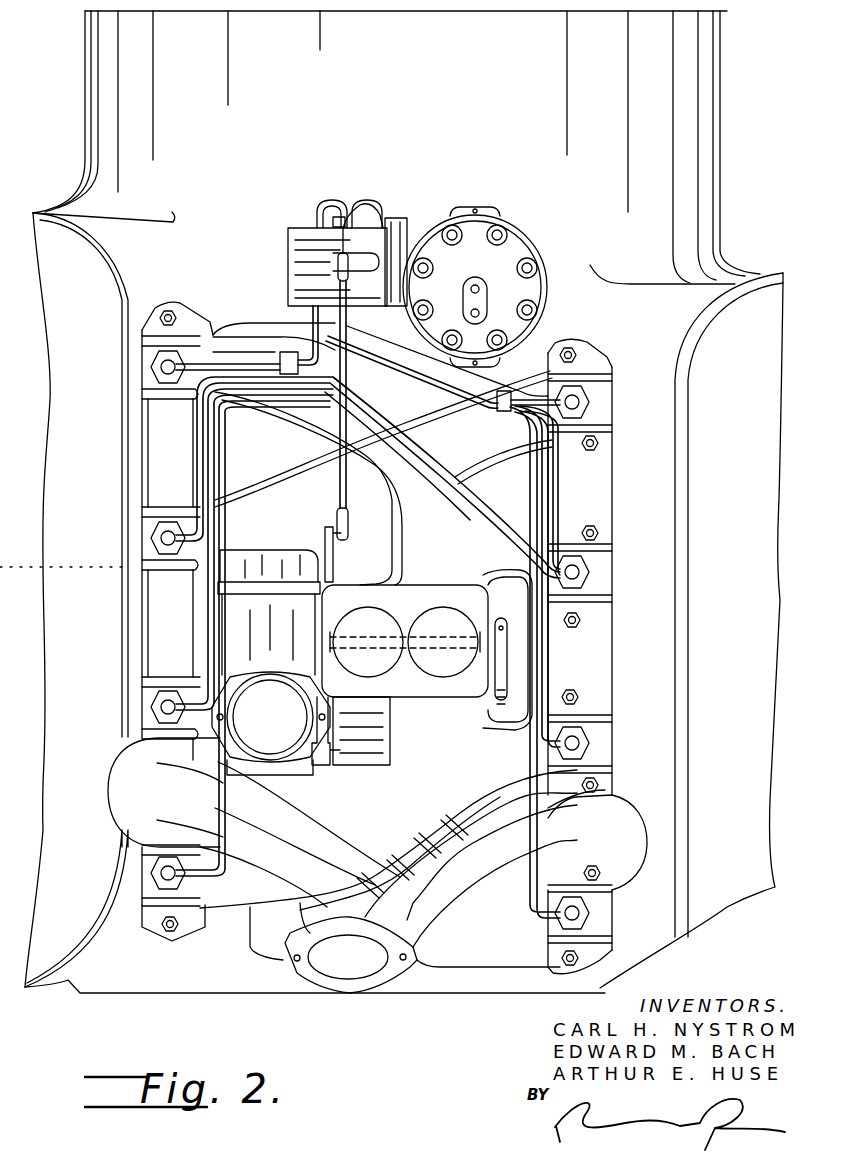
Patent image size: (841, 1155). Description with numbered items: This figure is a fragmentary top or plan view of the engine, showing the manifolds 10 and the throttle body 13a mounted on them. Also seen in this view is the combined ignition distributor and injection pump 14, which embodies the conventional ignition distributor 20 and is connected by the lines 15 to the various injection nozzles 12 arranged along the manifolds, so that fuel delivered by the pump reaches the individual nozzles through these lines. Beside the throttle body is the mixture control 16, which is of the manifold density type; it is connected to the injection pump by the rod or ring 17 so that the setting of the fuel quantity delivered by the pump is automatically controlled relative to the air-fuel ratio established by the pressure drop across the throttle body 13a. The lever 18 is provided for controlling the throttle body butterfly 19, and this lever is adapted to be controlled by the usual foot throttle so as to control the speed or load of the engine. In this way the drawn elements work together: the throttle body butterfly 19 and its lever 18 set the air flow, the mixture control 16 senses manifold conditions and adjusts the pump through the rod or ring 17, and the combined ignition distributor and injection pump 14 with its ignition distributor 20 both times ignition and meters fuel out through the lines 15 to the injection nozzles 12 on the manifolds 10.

The manifolds 10 is at (377, 647).
The injection nozzles 12 is at (157, 873).
The throttle body 13a is at (413, 686).
The combined ignition distributor and injection pump 14 is at (413, 207).
The lines 15 is at (415, 368).
The mixture control 16 is at (276, 662).
The rod or ring 17 is at (333, 478).
The lever 18 is at (507, 664).
The throttle body butterfly 19 is at (405, 642).
The ignition distributor 20 is at (556, 318).